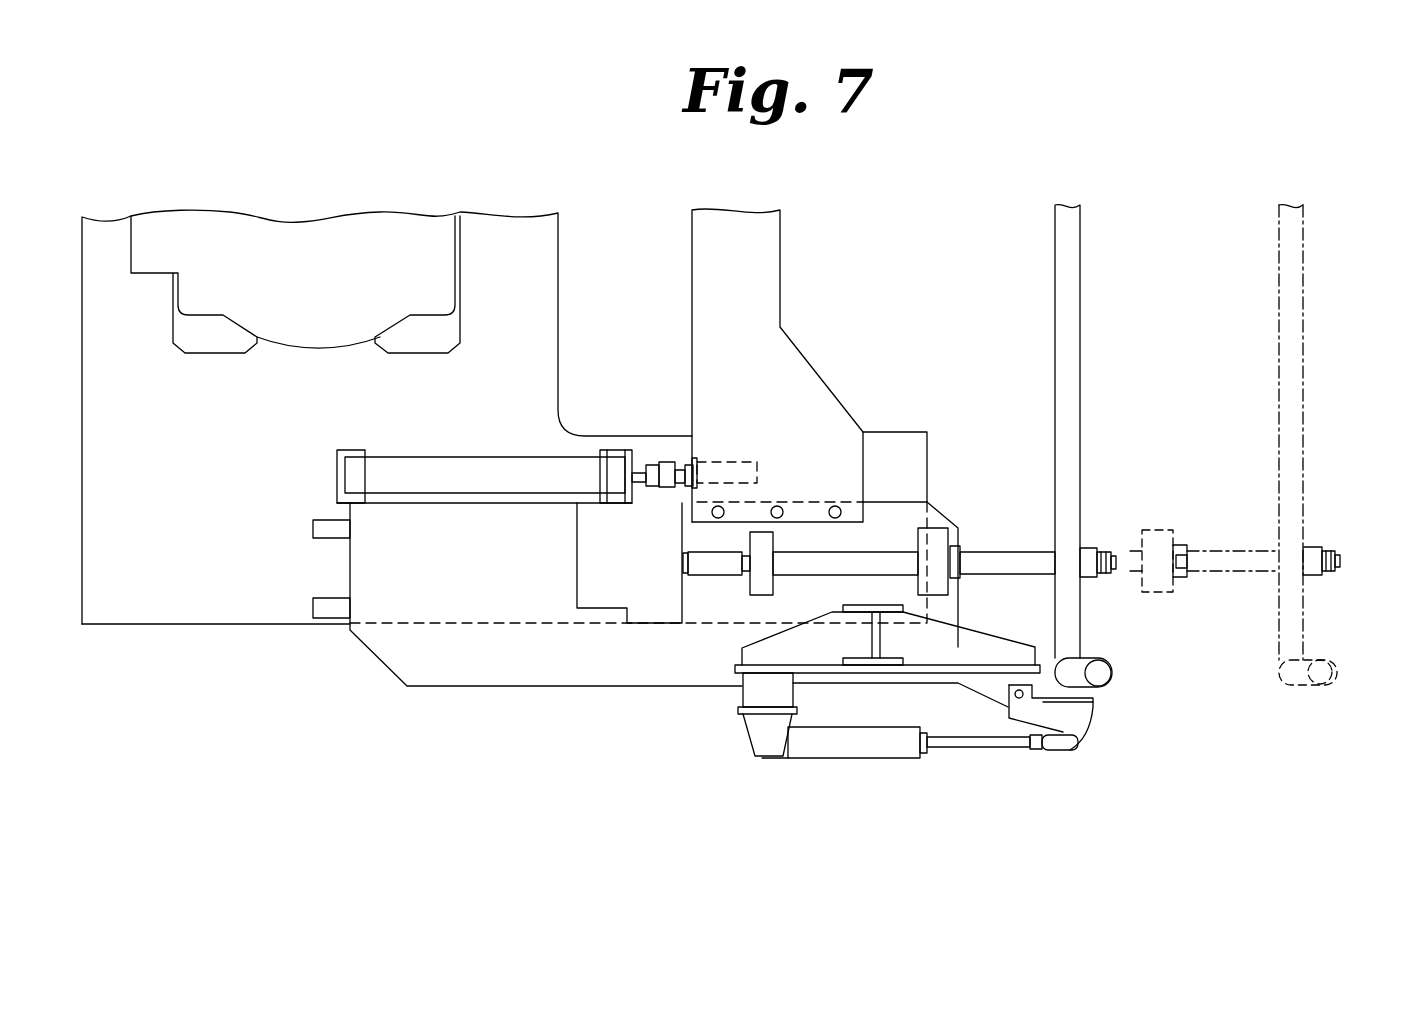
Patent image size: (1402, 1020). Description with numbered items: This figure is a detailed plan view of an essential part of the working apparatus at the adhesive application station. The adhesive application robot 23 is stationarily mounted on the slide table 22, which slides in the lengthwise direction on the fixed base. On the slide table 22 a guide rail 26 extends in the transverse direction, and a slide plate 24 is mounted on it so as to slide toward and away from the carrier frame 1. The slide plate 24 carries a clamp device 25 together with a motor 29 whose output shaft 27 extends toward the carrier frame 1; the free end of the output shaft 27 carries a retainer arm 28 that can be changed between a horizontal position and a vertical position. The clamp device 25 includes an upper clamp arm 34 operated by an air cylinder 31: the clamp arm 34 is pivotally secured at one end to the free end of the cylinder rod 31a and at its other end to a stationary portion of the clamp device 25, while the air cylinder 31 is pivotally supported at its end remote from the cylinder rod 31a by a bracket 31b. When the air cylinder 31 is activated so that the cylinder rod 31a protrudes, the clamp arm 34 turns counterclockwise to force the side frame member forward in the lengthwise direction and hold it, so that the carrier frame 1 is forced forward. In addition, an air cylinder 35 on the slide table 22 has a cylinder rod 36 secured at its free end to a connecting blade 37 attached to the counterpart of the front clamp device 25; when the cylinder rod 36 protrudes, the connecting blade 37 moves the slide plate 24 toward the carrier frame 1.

The carrier frame 1 is at (1080, 360).
The slide table 22 is at (140, 628).
The adhesive application robot 23 is at (147, 260).
The slide plate 24 is at (438, 678).
The clamp device 25 is at (975, 760).
The guide rail 26 is at (330, 612).
The output shaft 27 is at (1011, 550).
The retainer arm 28 is at (1091, 548).
The motor 29 is at (580, 565).
The air cylinder 31 is at (840, 752).
The cylinder rod 31a is at (1030, 755).
The bracket 31b is at (760, 736).
The upper clamp arm 34 is at (1073, 720).
The air cylinder 35 is at (420, 460).
The cylinder rod 36 is at (656, 450).
The connecting blade 37 is at (770, 295).